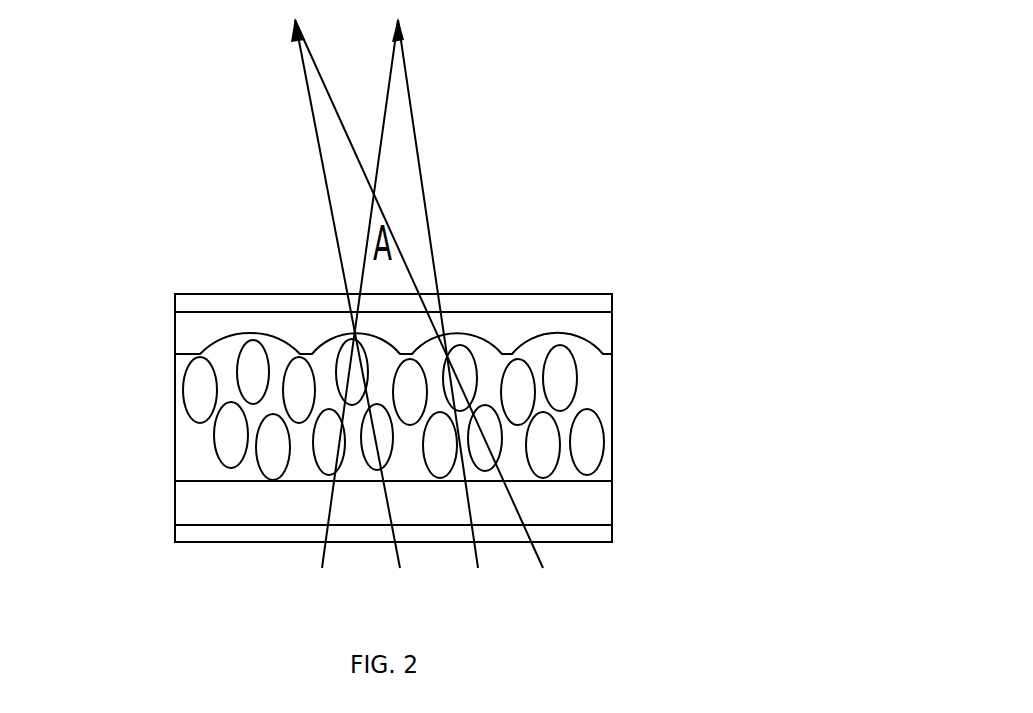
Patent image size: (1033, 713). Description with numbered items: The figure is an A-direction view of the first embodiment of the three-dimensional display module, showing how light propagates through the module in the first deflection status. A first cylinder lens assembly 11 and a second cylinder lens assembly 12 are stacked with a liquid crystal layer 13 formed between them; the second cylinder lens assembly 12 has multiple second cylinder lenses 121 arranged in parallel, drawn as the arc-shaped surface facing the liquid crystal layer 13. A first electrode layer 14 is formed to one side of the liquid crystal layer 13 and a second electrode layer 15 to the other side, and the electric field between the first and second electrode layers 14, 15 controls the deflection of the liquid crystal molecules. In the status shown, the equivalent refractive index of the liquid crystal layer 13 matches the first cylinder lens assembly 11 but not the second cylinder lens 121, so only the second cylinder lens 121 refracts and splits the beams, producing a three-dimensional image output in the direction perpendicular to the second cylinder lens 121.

The first cylinder lens assembly 11 is at (498, 516).
The second cylinder lens assembly 12 is at (515, 320).
The second cylinder lens 121 is at (213, 348).
The liquid crystal layer 13 is at (578, 392).
The first electrode layer 14 is at (493, 533).
The second electrode layer 15 is at (560, 303).